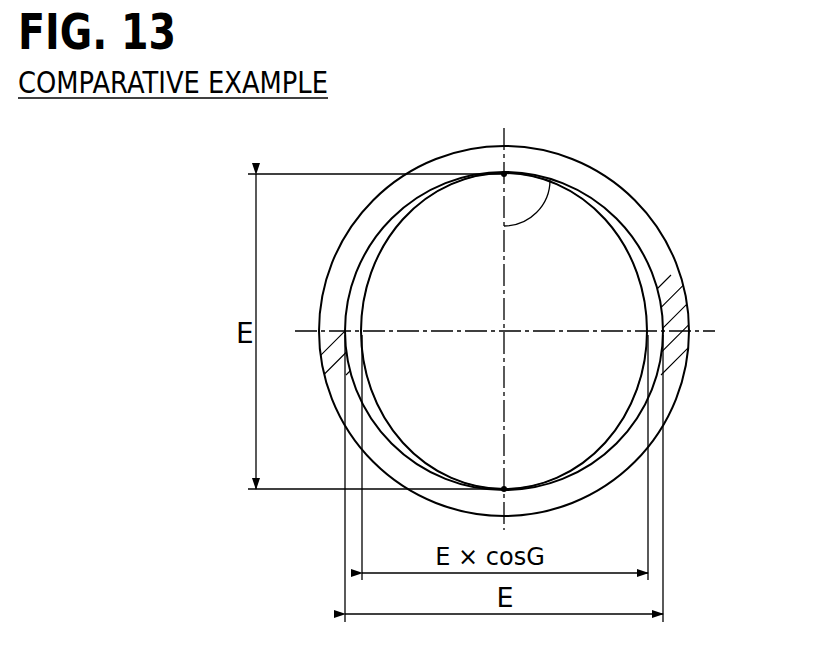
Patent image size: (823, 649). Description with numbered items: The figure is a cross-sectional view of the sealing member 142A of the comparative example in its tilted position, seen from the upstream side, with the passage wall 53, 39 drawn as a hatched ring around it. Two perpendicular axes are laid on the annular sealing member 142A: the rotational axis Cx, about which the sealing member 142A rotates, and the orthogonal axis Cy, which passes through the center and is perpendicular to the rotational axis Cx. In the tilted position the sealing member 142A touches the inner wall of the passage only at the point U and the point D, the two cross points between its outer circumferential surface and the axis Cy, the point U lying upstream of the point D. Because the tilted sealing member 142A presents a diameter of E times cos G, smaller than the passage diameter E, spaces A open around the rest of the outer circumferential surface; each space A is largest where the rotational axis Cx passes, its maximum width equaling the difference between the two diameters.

The through hole in support plate 53 is at (514, 160).
The sealing member 142A is at (553, 240).
The tube 39 is at (504, 331).
The rotational axis Cx is at (690, 310).
The orthogonal axis Cy is at (546, 178).
The point D is at (502, 172).
The point U is at (507, 491).
The spaces A is at (653, 320).